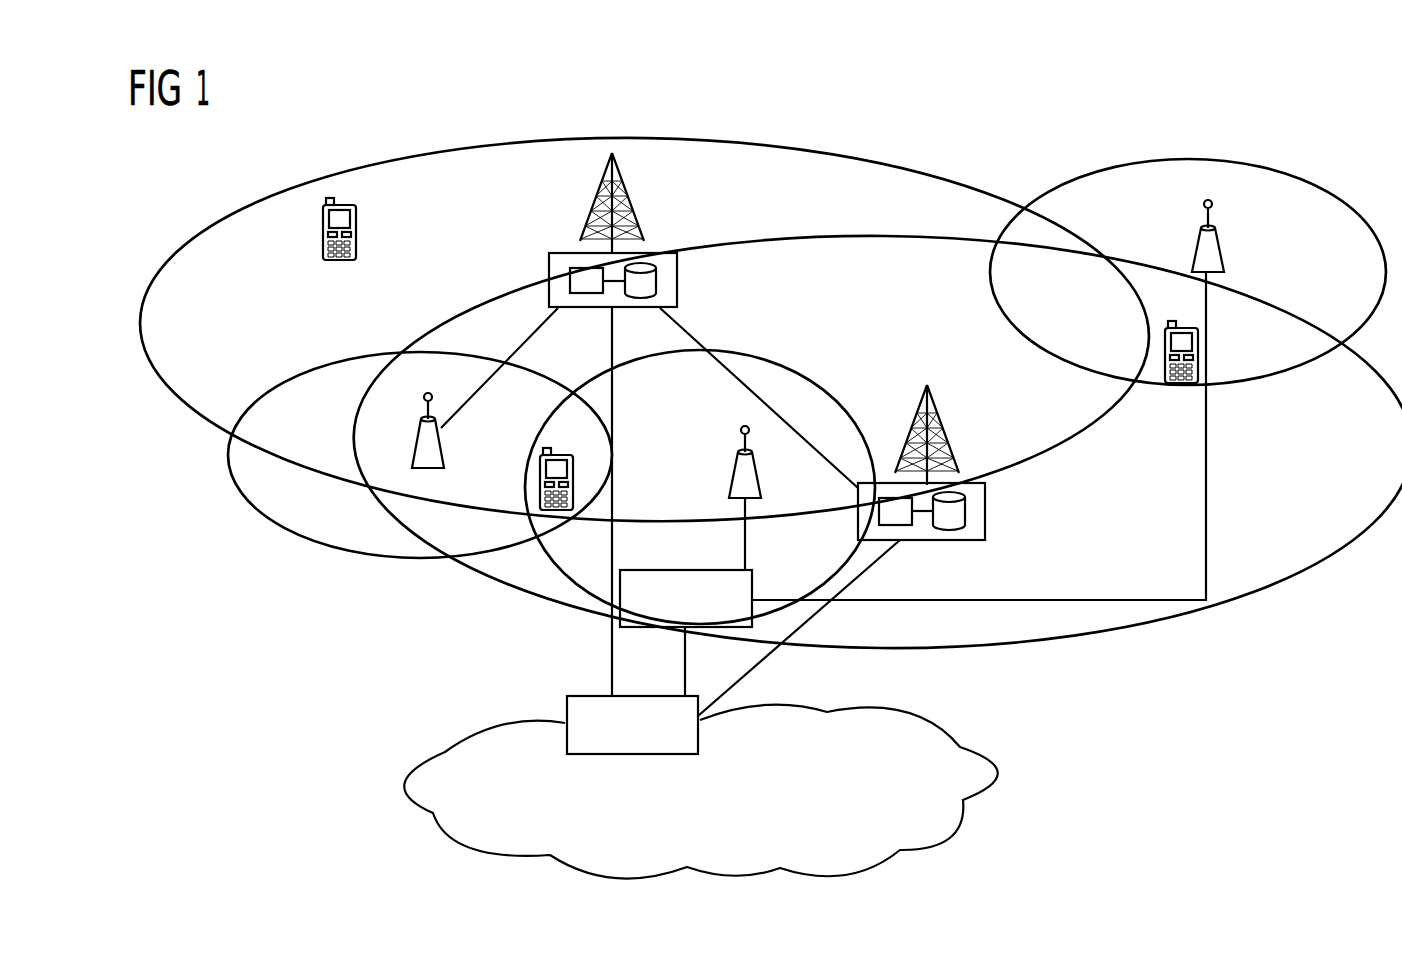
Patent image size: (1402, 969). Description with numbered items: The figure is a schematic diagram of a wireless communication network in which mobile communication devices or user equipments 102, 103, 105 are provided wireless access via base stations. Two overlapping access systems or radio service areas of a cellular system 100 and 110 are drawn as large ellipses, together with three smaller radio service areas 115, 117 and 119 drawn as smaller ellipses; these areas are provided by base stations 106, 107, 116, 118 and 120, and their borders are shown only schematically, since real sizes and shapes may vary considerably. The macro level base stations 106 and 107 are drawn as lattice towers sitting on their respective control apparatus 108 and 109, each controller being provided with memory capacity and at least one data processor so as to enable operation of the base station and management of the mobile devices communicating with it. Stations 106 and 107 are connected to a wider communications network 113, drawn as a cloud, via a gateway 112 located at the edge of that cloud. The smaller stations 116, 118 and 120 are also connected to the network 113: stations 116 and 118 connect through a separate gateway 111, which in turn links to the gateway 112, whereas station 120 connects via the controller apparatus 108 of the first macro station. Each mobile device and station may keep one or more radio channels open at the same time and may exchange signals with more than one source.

The radio service area of cellular system 100 is at (214, 206).
The mobile communication device 102 is at (356, 232).
The mobile communication device 103 is at (560, 467).
The mobile communication device 105 is at (1178, 345).
The base station 106 is at (638, 204).
The base station 107 is at (950, 427).
The control apparatus 108 is at (677, 280).
The control apparatus 109 is at (985, 511).
The radio service area of cellular system 110 is at (1244, 603).
The gateway 111 is at (752, 590).
The gateway 112 is at (633, 755).
The wider communications network 113 is at (1005, 772).
The smaller radio service area 115 is at (1282, 144).
The base station 116 is at (1222, 246).
The smaller radio service area 117 is at (800, 360).
The base station 118 is at (731, 470).
The smaller radio service area 119 is at (379, 564).
The base station 120 is at (436, 447).